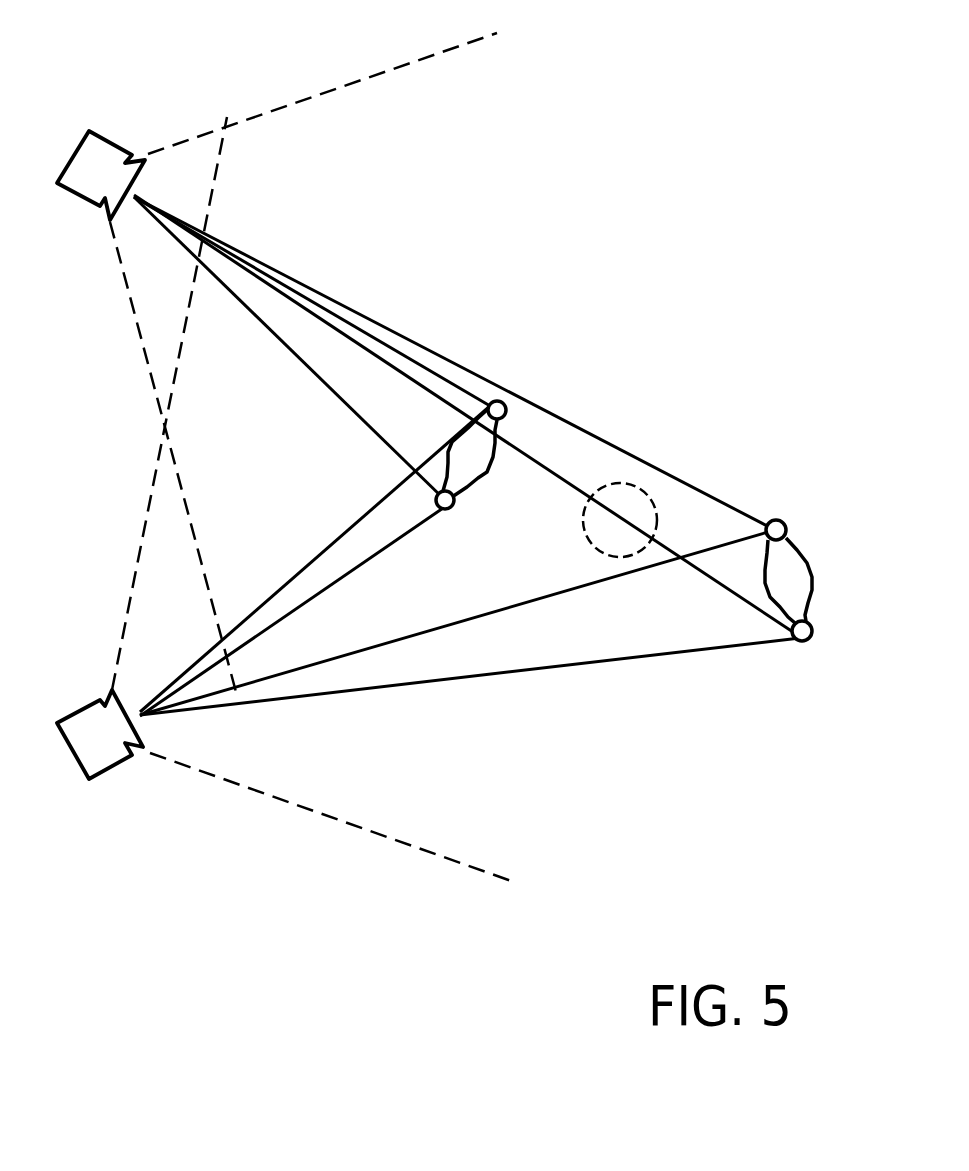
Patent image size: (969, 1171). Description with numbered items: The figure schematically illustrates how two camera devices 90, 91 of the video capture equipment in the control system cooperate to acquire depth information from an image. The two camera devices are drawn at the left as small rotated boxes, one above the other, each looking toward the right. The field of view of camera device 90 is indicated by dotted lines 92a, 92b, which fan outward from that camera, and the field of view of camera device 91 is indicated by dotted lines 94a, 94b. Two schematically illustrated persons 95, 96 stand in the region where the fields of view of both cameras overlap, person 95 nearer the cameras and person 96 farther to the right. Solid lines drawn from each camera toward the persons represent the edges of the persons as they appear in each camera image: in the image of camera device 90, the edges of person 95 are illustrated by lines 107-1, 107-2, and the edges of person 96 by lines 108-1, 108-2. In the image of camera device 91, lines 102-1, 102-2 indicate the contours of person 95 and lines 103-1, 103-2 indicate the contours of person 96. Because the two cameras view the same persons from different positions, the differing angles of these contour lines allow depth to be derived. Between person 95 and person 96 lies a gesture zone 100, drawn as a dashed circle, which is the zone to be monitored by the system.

The camera device 90 is at (110, 767).
The camera device 91 is at (110, 141).
The dotted line 92a is at (387, 840).
The dotted line 92b is at (131, 592).
The dotted line 94a is at (128, 299).
The dotted line 94b is at (387, 71).
The person 95 is at (500, 428).
The person 96 is at (800, 551).
The gesture zone 100 is at (658, 513).
The line 102-1 is at (423, 364).
The line 102-2 is at (308, 376).
The line 103-1 is at (372, 317).
The line 103-2 is at (392, 370).
The line 107-1 is at (310, 562).
The line 107-2 is at (342, 580).
The line 108-1 is at (465, 618).
The line 108-2 is at (467, 677).